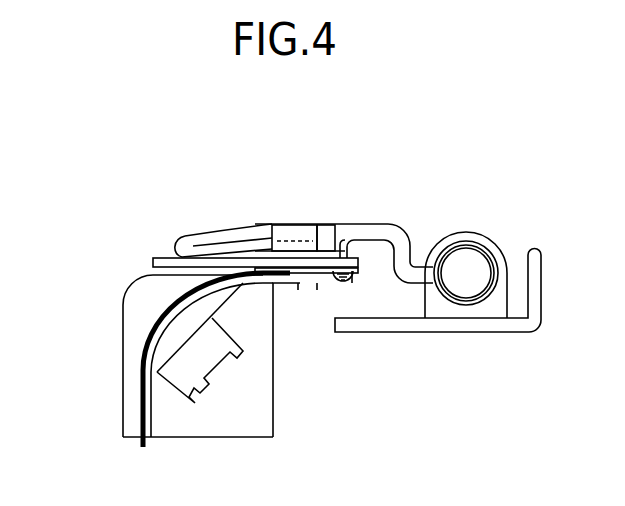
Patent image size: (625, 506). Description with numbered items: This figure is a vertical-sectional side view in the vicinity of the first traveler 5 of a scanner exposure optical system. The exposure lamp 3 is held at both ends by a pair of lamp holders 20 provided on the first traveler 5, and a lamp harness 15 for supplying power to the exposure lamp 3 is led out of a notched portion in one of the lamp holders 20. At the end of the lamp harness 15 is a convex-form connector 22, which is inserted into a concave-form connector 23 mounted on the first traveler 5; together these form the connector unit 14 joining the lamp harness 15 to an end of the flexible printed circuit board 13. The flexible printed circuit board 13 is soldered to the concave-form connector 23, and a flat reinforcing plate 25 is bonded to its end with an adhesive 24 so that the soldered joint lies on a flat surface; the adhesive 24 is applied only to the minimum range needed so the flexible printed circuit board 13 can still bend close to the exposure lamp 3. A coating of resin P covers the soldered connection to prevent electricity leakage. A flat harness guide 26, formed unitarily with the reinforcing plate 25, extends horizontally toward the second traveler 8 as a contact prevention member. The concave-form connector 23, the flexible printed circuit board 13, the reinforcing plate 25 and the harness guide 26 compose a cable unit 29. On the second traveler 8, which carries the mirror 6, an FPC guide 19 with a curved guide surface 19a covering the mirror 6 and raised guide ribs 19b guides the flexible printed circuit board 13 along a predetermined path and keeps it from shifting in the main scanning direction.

The cable unit 29 is at (110, 237).
The harness guide 26 is at (156, 257).
The lamp harness 15 is at (174, 250).
The connector unit 14 is at (290, 212).
The convex-form connector 22 is at (277, 223).
The concave-form connector 23 is at (326, 223).
The exposure lamp 3 is at (437, 247).
The lamp holder 20 is at (480, 240).
The first traveler 5 is at (542, 284).
The adhesive 24 is at (296, 274).
The reinforcing plate 25 is at (320, 274).
The coating of resin P is at (352, 284).
The flexible printed circuit board 13 is at (140, 330).
The guide rib 19b is at (145, 298).
The FPC guide 19 is at (128, 423).
The guide surface 19a is at (140, 383).
The second traveler 8 is at (220, 413).
The mirror 6 is at (189, 380).